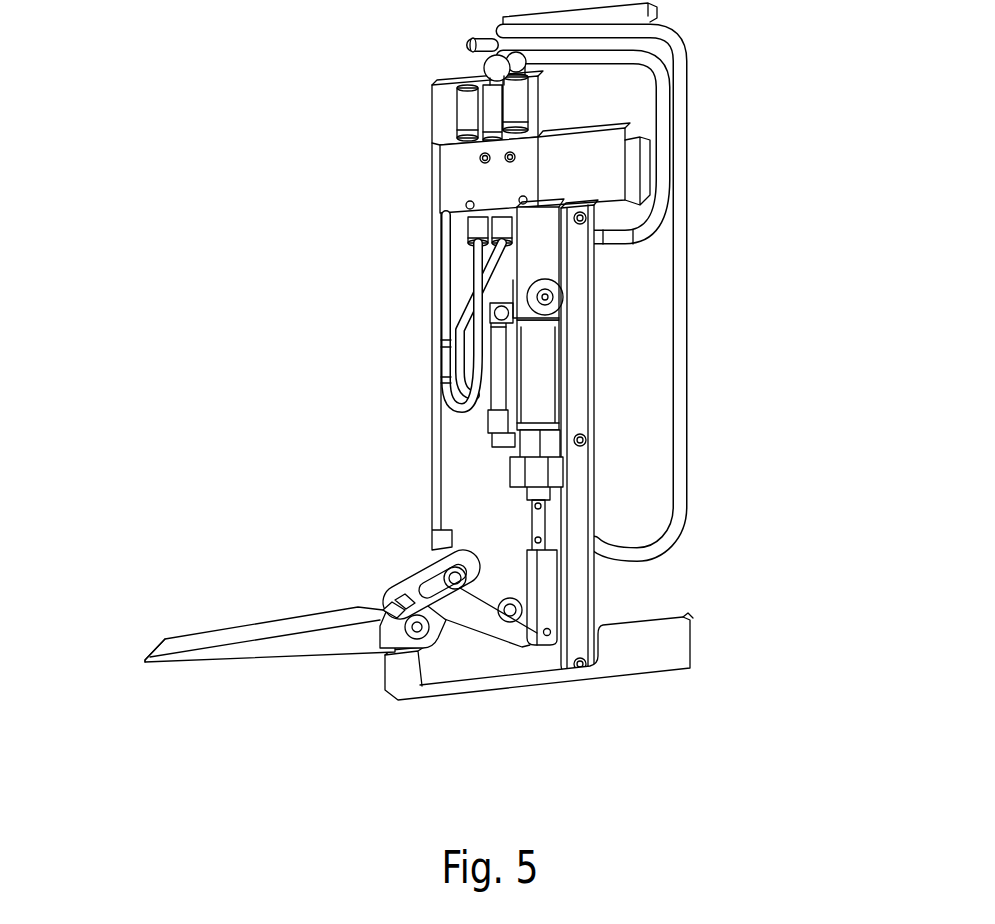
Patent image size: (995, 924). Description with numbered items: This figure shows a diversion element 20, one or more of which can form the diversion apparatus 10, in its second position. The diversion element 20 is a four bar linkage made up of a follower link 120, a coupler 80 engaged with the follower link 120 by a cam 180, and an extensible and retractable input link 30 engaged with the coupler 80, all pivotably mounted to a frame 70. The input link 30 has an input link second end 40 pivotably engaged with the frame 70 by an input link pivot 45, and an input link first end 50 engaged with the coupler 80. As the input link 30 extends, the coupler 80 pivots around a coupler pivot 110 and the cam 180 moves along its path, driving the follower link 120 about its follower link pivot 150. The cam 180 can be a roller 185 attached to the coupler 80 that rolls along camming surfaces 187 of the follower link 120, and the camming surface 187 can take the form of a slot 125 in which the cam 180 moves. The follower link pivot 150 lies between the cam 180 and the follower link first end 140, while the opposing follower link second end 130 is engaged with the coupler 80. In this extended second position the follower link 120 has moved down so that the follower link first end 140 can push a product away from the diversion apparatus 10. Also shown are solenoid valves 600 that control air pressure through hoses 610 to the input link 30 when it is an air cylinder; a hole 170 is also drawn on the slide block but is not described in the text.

The diversion apparatus 10 is at (722, 219).
The diversion element 20 is at (722, 449).
The extensible and retractable input link 30 is at (545, 400).
The input link second end 40 is at (535, 278).
The input link pivot 45 is at (555, 302).
The input link first end 50 is at (545, 640).
The frame 70 is at (482, 471).
The coupler 80 is at (495, 612).
The coupler pivot 110 is at (512, 598).
The follower link 120 is at (323, 640).
The slot 125 is at (428, 615).
The follower link second end 130 is at (470, 565).
The follower link first end 140 is at (145, 659).
The follower link pivot 150 is at (405, 635).
The stop pin 170 is at (547, 632).
The cam 180 is at (458, 608).
The roller 185 is at (452, 572).
The camming surface 187 is at (423, 607).
The solenoid valves 600 is at (448, 190).
The hoses 610 is at (457, 312).